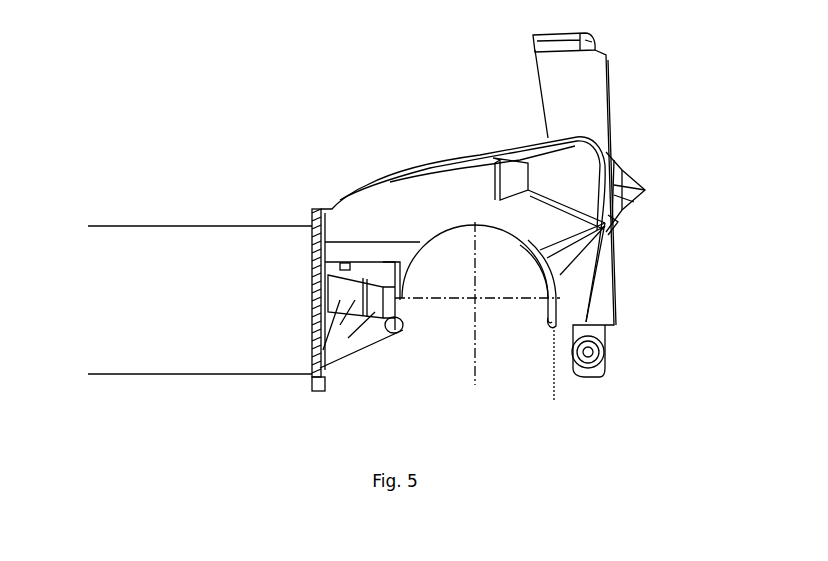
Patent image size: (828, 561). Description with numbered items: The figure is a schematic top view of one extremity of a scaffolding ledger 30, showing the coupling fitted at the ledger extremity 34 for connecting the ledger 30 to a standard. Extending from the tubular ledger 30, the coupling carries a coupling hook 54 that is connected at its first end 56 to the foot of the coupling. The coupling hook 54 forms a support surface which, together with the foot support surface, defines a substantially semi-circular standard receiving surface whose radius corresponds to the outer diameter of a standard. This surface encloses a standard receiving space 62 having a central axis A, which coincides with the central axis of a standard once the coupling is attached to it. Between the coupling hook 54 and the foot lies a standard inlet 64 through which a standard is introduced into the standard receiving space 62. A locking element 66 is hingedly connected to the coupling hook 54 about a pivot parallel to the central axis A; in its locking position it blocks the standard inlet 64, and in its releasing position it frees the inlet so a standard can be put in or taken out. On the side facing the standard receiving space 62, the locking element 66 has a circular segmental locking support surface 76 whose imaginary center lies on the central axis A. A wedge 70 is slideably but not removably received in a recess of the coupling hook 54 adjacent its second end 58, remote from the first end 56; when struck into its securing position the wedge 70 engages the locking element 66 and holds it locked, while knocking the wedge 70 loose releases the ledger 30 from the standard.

The ledger 30 is at (132, 208).
The ledger extremity 34 is at (302, 208).
The first end of the coupling hook 56 is at (347, 160).
The standard receiving space 62 is at (458, 240).
The coupling hook 54 is at (477, 134).
The wedge 70 is at (586, 96).
The second end of the coupling hook 58 is at (632, 272).
The circular segmental locking support surface 76 is at (545, 266).
The standard inlet 64 is at (461, 366).
The locking element 66 is at (555, 330).
The central axis of the standard receiving space A is at (474, 300).